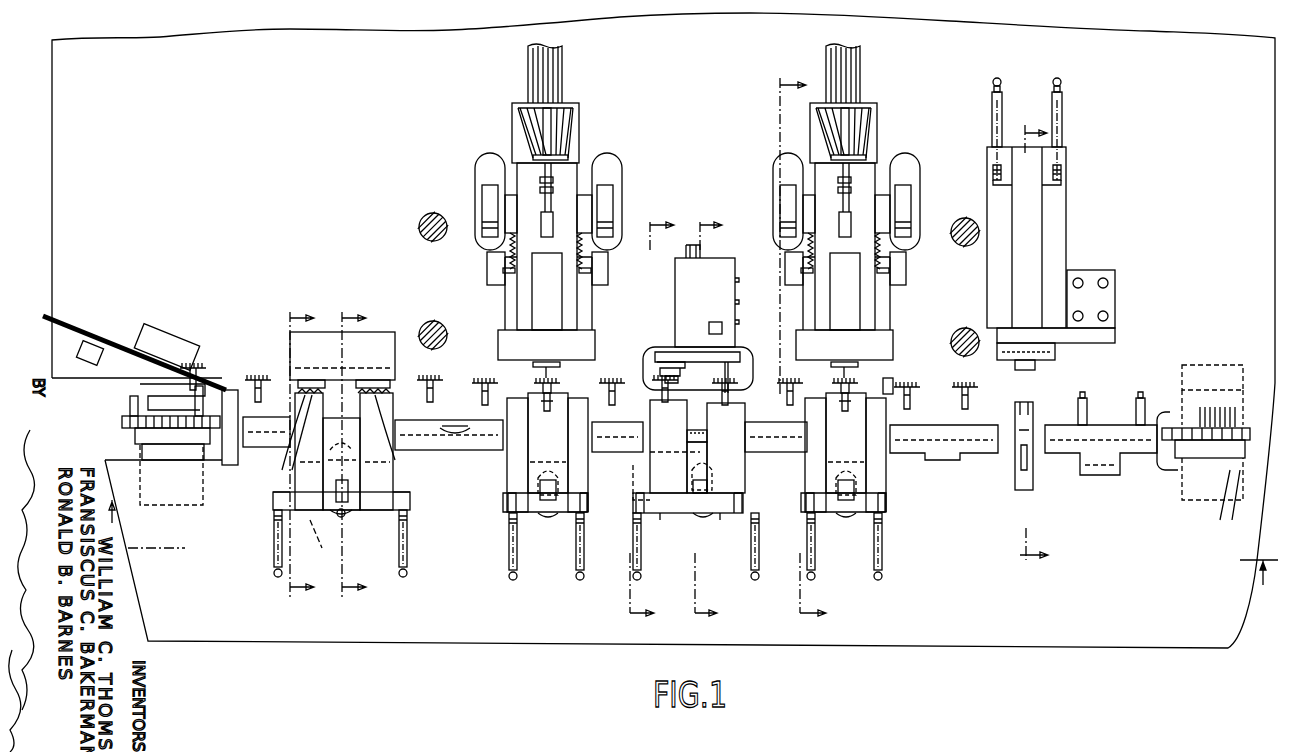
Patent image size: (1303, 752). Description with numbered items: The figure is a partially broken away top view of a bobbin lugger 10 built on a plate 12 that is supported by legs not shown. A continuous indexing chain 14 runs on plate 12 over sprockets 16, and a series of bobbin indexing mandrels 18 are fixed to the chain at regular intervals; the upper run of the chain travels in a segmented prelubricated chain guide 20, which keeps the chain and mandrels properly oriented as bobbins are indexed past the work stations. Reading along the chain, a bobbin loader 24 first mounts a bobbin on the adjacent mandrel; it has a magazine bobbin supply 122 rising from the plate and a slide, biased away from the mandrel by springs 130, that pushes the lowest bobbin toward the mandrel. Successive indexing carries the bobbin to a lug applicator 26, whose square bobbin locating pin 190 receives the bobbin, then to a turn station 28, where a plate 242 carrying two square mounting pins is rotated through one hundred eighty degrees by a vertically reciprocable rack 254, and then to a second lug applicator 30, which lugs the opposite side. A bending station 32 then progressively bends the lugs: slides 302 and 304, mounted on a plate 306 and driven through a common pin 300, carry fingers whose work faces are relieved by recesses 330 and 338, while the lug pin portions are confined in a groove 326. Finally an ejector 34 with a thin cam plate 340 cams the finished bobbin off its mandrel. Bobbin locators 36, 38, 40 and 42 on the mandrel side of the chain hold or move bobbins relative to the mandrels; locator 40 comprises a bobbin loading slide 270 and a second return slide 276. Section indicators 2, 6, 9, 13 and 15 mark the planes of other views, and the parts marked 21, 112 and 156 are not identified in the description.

The bobbin lugger 10 is at (34, 62).
The plate 12 is at (278, 154).
The section line 2- 2 is at (683, 561).
The ejector 34 is at (78, 320).
The thin cam plate 340 is at (118, 336).
The sprockets 16 is at (125, 418).
The bobbin indexing mandrels 18 is at (246, 405).
The segmented prelubricated chain guide 20 is at (616, 452).
The conveyor section 21 is at (478, 440).
The bobbin locator 36 is at (1006, 510).
The continuous indexing chain 14 is at (1170, 455).
The bending station 32 is at (328, 330).
The groove 326 is at (344, 368).
The recess 338 is at (300, 440).
The recesses 330 is at (365, 400).
The slide 304 is at (290, 500).
The slide 302 is at (390, 490).
The plate 306 is at (342, 512).
The pin 300 is at (318, 540).
The section line 15- 15 is at (343, 453).
The lug applicator 30 is at (592, 132).
The wire bundle 112 is at (558, 62).
The bobbin locator 42 is at (558, 522).
The drive wheel 156 is at (433, 320).
The turn station 28 is at (737, 209).
The vertically reciprocable rack 254 is at (713, 322).
The plate 242 is at (656, 355).
The second return slide 276 is at (662, 520).
The bobbin loading slide 270 is at (722, 520).
The bobbin locator 40 is at (689, 552).
The section line 13- 13 is at (649, 422).
The section line 9- 9 is at (803, 354).
The lug applicator 26 is at (895, 108).
The bobbin locator 38 is at (852, 528).
The square bobbin locating pin 190 is at (884, 386).
The bobbin loader 24 is at (1075, 251).
The springs 130 is at (1050, 95).
The section line 6- 6 is at (1034, 344).
The magazine bobbin supply 122 is at (1052, 352).